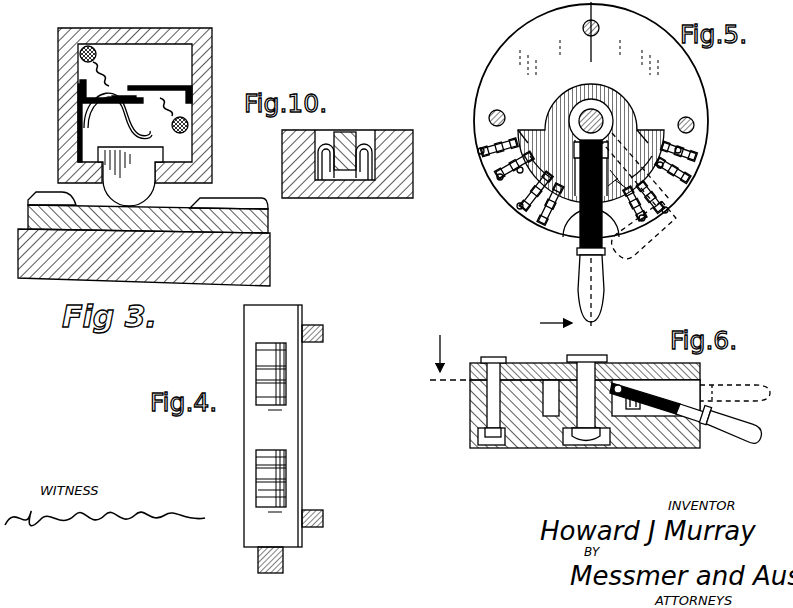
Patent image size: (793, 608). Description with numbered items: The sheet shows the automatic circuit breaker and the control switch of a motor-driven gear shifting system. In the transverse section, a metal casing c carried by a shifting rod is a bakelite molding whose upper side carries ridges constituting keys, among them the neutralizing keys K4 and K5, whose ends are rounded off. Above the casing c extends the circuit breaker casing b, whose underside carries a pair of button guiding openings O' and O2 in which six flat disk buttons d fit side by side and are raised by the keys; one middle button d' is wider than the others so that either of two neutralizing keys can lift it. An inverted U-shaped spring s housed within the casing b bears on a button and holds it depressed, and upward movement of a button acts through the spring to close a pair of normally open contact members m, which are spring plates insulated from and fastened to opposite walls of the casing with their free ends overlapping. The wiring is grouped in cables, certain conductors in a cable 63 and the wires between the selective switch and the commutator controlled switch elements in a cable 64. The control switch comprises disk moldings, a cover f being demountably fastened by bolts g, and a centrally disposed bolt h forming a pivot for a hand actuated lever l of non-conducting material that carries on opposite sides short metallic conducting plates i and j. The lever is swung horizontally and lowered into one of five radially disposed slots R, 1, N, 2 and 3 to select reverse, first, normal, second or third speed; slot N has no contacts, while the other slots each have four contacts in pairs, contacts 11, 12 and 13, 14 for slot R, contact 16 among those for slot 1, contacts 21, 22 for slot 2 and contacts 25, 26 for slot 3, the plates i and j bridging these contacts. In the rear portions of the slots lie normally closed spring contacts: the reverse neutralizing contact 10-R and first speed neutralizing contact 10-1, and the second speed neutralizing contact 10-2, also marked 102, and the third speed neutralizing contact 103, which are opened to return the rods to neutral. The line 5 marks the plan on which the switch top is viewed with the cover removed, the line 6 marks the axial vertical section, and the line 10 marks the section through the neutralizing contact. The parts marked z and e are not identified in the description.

In FIG. 3, the circuit breaker casing b is at (152, 58).
In FIG. 3, the cable 63 is at (78, 58).
In FIG. 3, the contact members m is at (134, 96).
In FIG. 3, the cable 64 is at (192, 133).
In FIG. 3, the inverted U-shaped spring s is at (130, 133).
In FIG. 3, the middle button d' is at (130, 176).
In FIG. 4, the middle button d' is at (250, 481).
In FIG. 3, the neutralizing key K4 is at (48, 196).
In FIG. 3, the neutralizing key K5 is at (216, 200).
In FIG. 3, the metal casing c is at (262, 219).
In FIG. 10, the second speed neutralizing contact 10-2 is at (330, 140).
In FIG. 6, the second speed neutralizing contact 10-2 is at (607, 442).
In FIG. 10, the insulating post z is at (356, 148).
In FIG. 5, the contact 11 is at (486, 156).
In FIG. 5, the contact 12 is at (480, 157).
In FIG. 5, the reverse slot R is at (522, 170).
In FIG. 5, the contact 13 is at (521, 175).
In FIG. 5, the contact 14 is at (497, 180).
In FIG. 5, the reverse neutralizing contact 10-R is at (530, 140).
In FIG. 5, the first speed neutralizing contact 10-1 is at (550, 186).
In FIG. 5, the first speed slot 1 is at (537, 216).
In FIG. 5, the contact 16 is at (522, 209).
In FIG. 5, the conducting plate i is at (565, 236).
In FIG. 5, the conducting plate j is at (602, 233).
In FIG. 5, the section line 6— 6 is at (591, 323).
In FIG. 5, the contact 22 is at (644, 222).
In FIG. 5, the contact 21 is at (668, 211).
In FIG. 5, the contact 26 is at (690, 178).
In FIG. 5, the contact 25 is at (700, 153).
In FIG. 5, the third speed slot 3 is at (683, 143).
In FIG. 5, the third speed neutralizing contact 103 is at (656, 136).
In FIG. 5, the second speed neutralizing contact 102 is at (624, 184).
In FIG. 5, the section line 10— 10 is at (638, 185).
In FIG. 5, the second speed slot 2 is at (650, 196).
In FIG. 5, the normal slot N is at (623, 204).
In FIG. 6, the cover f is at (472, 376).
In FIG. 6, the bolts g is at (495, 358).
In FIG. 6, the centrally disposed bolt h is at (598, 361).
In FIG. 6, the section line 5— 5 is at (770, 398).
In FIG. 6, the block e is at (650, 449).
In FIG. 6, the hand actuated lever l is at (730, 437).
In FIG. 4, the button guiding opening O' is at (251, 376).
In FIG. 4, the flat disk buttons d is at (285, 439).
In FIG. 4, the button guiding opening O2 is at (262, 488).